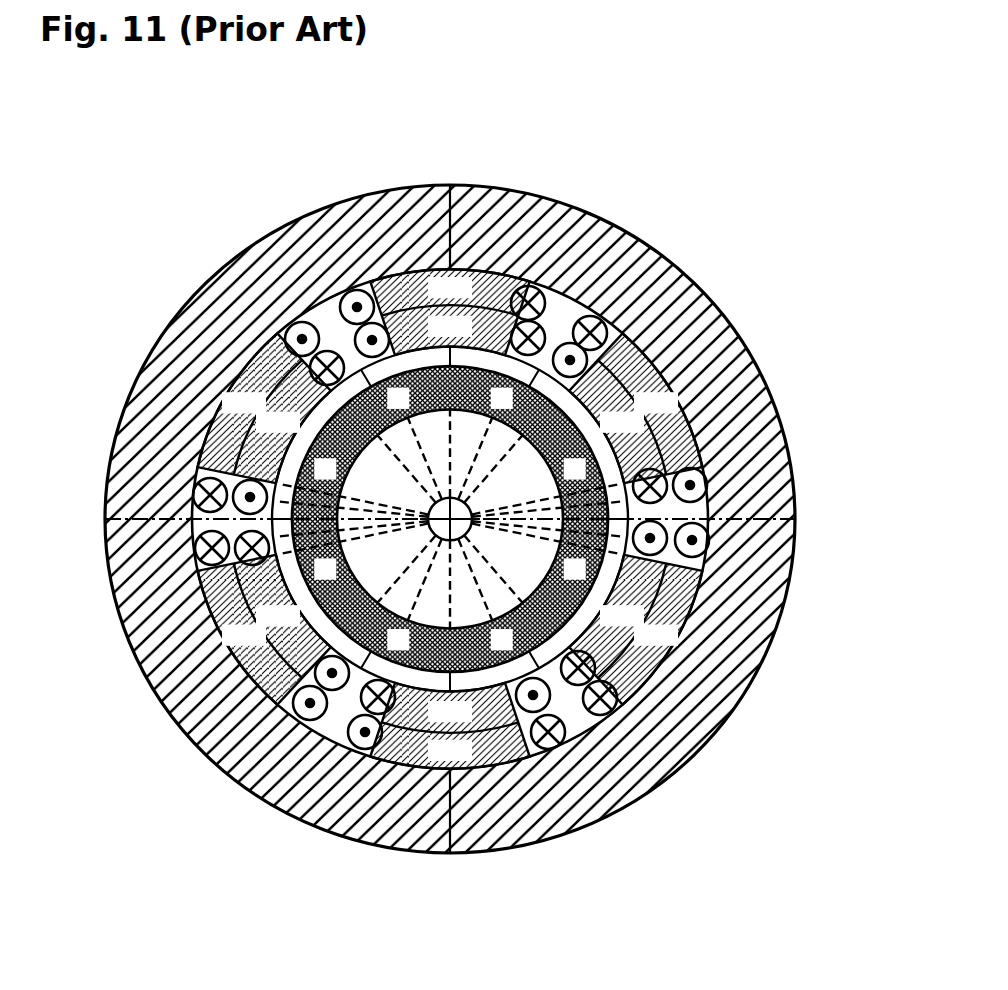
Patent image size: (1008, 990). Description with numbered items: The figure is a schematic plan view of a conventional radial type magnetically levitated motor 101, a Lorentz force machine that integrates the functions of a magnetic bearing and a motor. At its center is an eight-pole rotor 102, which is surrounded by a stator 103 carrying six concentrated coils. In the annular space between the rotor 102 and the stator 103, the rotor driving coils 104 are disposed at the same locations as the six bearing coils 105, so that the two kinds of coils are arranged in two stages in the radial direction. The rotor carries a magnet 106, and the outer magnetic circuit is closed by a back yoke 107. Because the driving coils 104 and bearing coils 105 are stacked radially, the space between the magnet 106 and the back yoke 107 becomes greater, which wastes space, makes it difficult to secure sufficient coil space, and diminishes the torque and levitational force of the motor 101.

The magnetically levitated motor 101 is at (167, 210).
The rotor 102 is at (540, 385).
The stator 103 is at (792, 437).
The rotor driving coils 104 is at (322, 330).
The bearing coils 105 is at (715, 335).
The magnet 106 is at (540, 647).
The back yoke 107 is at (720, 707).